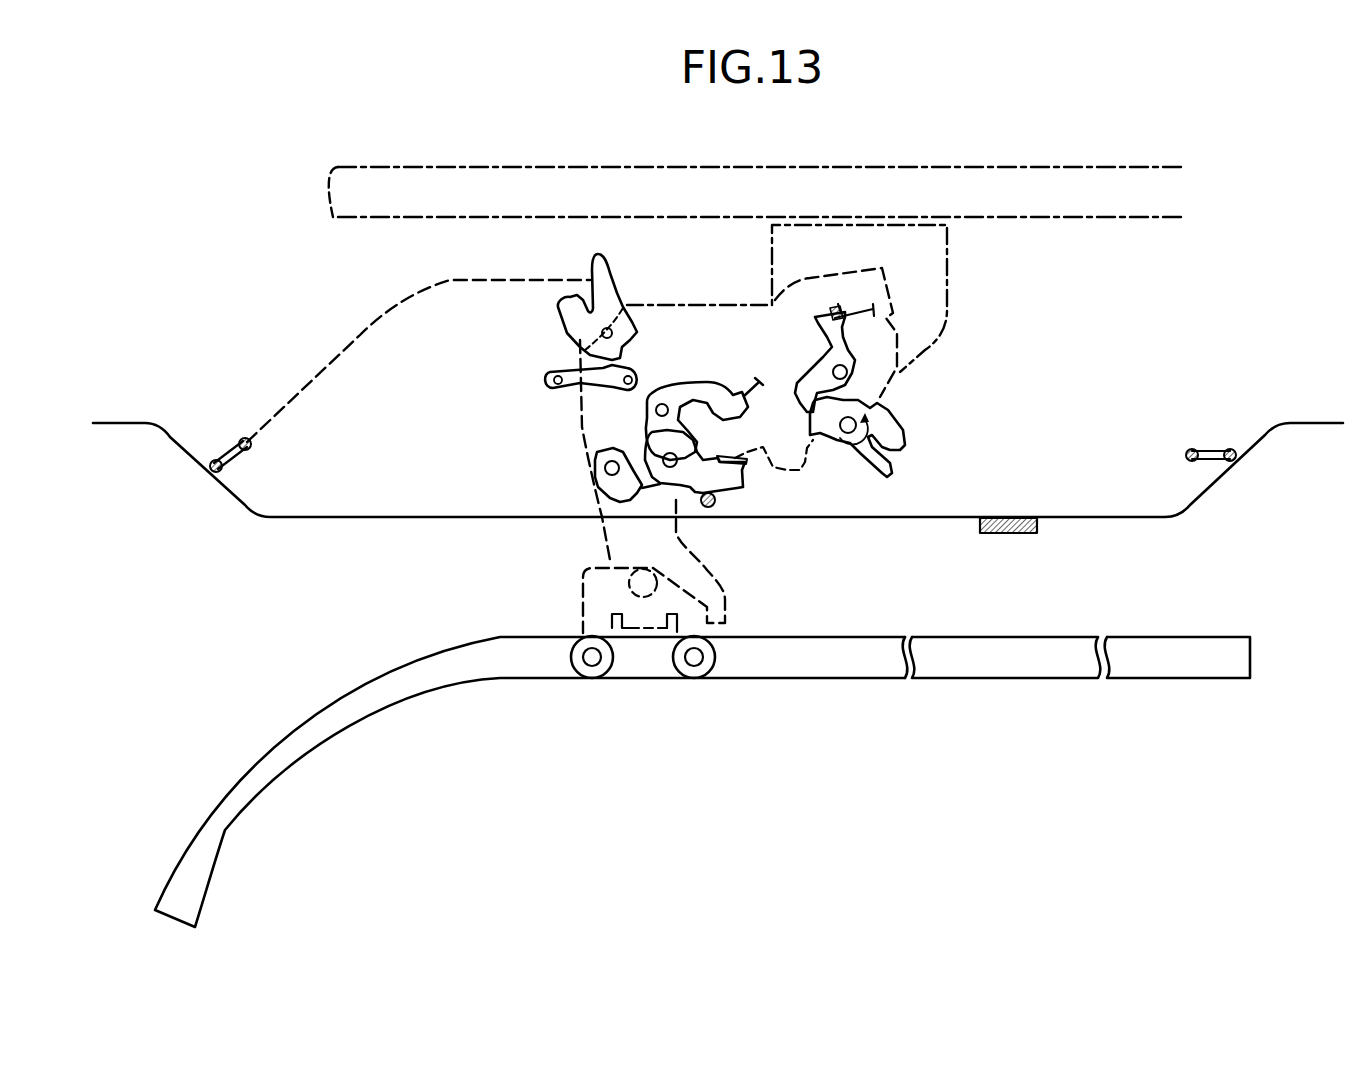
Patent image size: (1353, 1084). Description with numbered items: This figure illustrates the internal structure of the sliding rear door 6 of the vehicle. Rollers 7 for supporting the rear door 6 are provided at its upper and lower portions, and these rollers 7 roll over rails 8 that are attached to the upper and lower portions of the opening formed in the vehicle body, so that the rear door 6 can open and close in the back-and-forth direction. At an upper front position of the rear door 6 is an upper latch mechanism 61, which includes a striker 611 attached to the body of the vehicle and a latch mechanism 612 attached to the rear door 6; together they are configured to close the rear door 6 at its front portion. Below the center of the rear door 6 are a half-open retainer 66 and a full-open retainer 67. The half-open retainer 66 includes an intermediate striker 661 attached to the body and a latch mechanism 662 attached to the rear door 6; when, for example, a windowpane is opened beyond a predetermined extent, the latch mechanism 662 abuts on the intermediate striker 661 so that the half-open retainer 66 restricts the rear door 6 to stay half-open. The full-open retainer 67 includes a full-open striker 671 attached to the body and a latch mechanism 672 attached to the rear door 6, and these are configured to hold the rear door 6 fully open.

The rear door 6 is at (847, 165).
The upper latch mechanism 61 is at (607, 312).
The striker 611 is at (228, 440).
The latch mechanism 612 is at (613, 283).
The half-open retainer 66 is at (731, 474).
The intermediate striker 661 is at (1015, 517).
The latch mechanism 662 is at (745, 490).
The full-open retainer 67 is at (894, 408).
The full-open striker 671 is at (1213, 447).
The latch mechanism 672 is at (903, 420).
The rollers 7 is at (598, 678).
The rails 8 is at (477, 677).